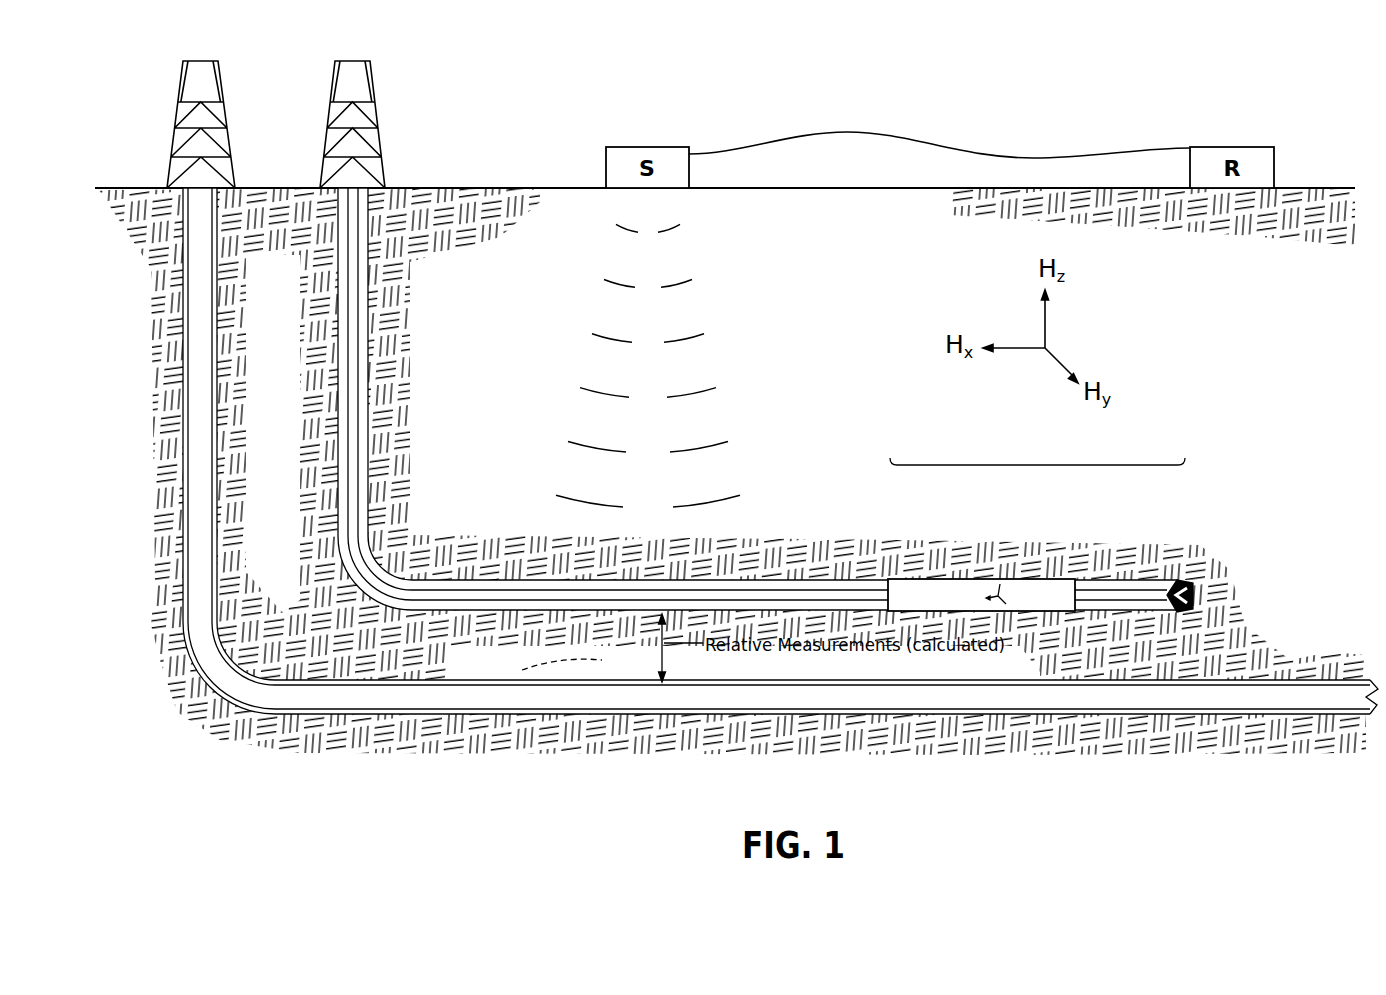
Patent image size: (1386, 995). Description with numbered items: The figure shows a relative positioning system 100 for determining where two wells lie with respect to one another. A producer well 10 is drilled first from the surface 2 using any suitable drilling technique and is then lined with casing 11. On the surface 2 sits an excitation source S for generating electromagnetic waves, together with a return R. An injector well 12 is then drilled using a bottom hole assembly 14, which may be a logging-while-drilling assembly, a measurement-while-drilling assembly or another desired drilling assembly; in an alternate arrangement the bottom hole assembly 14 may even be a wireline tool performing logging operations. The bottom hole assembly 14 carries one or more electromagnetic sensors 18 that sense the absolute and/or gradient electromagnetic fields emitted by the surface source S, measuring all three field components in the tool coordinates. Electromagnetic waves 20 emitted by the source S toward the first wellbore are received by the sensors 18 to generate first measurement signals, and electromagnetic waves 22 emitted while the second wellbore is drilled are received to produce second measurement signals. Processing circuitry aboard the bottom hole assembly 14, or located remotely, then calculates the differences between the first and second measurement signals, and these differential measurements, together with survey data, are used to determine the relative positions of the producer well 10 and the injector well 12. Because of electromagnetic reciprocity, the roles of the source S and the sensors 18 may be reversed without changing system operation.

The relative positioning system 100 is at (560, 68).
The surface 2 is at (490, 188).
The producer well 10 is at (779, 448).
The casing 11 is at (196, 347).
The injector well 12 is at (352, 418).
The bottom hole assembly 14 is at (876, 418).
The electromagnetic sensors 18 is at (1006, 572).
The electromagnetic waves 20 is at (1180, 577).
The electromagnetic waves 22 is at (714, 322).